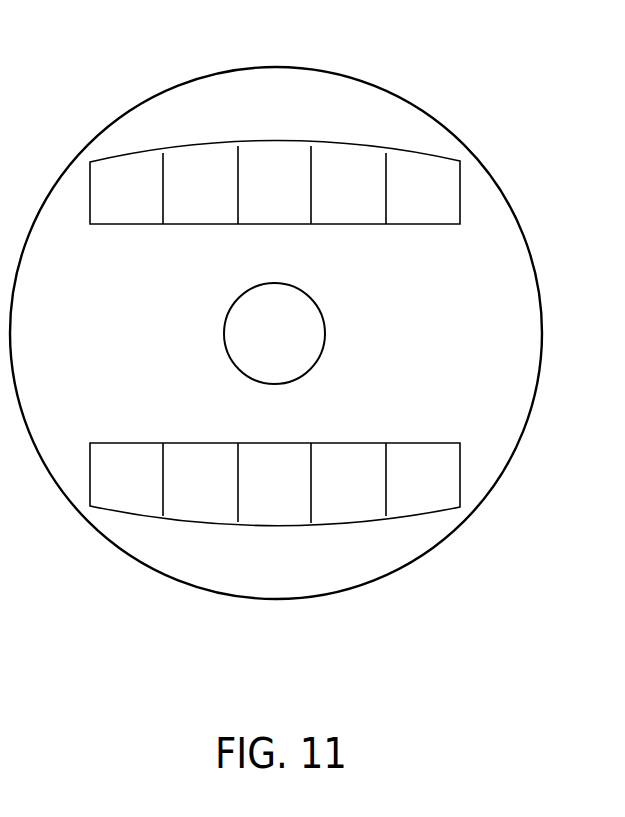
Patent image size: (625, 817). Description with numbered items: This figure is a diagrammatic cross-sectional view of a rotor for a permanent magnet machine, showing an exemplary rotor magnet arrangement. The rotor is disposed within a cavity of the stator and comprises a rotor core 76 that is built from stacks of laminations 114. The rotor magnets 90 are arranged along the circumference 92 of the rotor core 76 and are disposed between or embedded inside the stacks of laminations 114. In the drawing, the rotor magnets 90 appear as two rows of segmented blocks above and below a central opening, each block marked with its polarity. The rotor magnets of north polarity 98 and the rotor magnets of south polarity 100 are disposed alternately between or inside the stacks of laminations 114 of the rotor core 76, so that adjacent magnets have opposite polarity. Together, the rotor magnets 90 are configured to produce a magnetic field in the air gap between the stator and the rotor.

The rotor core 76 is at (302, 303).
The rotor magnets 90 is at (460, 452).
The circumference 92 is at (318, 67).
The rotor magnets of north polarity 98 is at (295, 157).
The rotor magnets of south polarity 100 is at (337, 213).
The stacks of laminations 114 is at (198, 543).